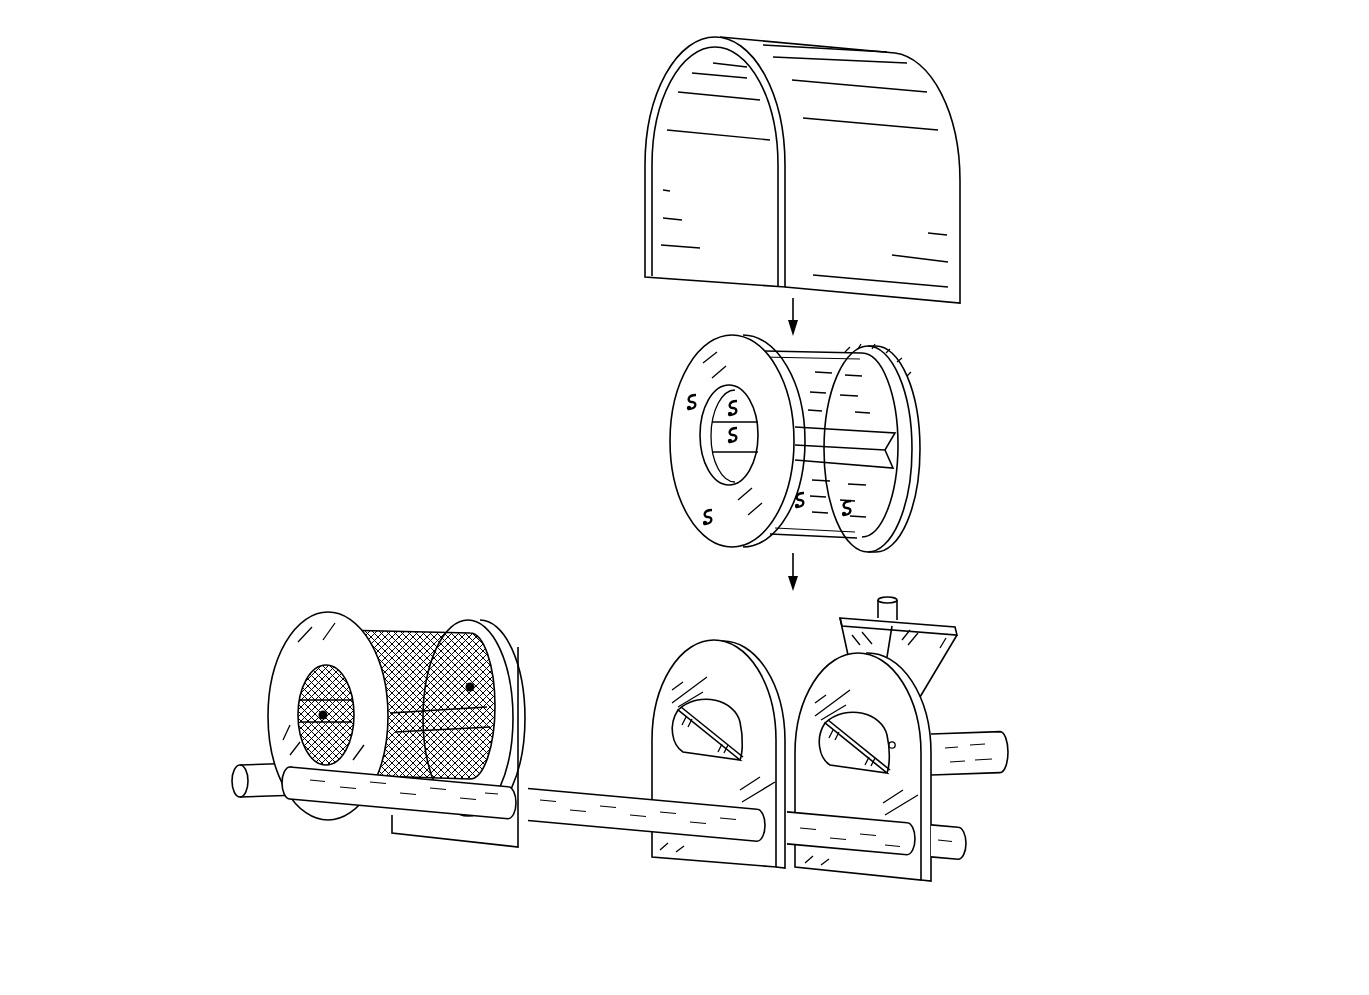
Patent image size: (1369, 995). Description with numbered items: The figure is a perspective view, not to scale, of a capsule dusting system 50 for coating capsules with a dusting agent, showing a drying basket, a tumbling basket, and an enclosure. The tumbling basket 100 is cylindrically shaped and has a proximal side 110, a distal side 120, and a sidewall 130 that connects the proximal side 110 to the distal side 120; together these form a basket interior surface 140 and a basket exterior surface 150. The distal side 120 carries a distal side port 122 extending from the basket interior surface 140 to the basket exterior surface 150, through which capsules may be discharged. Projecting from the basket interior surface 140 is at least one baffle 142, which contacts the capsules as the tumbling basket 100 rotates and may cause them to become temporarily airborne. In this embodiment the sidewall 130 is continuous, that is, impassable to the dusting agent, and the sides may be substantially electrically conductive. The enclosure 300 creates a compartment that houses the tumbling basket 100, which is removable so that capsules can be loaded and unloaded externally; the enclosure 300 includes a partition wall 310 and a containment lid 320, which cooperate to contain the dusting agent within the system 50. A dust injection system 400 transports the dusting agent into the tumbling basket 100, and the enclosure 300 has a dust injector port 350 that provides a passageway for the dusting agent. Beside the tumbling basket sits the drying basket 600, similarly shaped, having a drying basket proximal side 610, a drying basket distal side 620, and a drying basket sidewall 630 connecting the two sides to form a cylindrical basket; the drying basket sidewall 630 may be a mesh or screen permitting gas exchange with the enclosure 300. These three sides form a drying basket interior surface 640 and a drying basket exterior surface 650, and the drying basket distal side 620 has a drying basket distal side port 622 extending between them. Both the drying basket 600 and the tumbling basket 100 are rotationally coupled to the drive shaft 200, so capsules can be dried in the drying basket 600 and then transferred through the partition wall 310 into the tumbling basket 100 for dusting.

The capsule dusting system 50 is at (392, 268).
The tumbling basket 100 is at (624, 323).
The proximal side 110 is at (915, 490).
The distal side 120 is at (688, 402).
The distal side port 122 is at (708, 472).
The sidewall 130 is at (850, 512).
The basket interior surface 140 is at (731, 403).
The baffle 142 is at (728, 437).
The basket exterior surface 150 is at (798, 504).
The drive shaft 200 is at (290, 790).
The enclosure 300 is at (712, 639).
The partition wall 310 is at (753, 867).
The containment lid 320 is at (921, 64).
The dust injector port 350 is at (894, 749).
The dust injection system 400 is at (957, 643).
The drying basket 600 is at (327, 614).
The drying basket proximal side 610 is at (480, 628).
The drying basket distal side 620 is at (300, 645).
The drying basket distal side port 622 is at (308, 690).
The drying basket sidewall 630 is at (405, 628).
The drying basket interior surface 640 is at (320, 715).
The drying basket exterior surface 650 is at (472, 686).